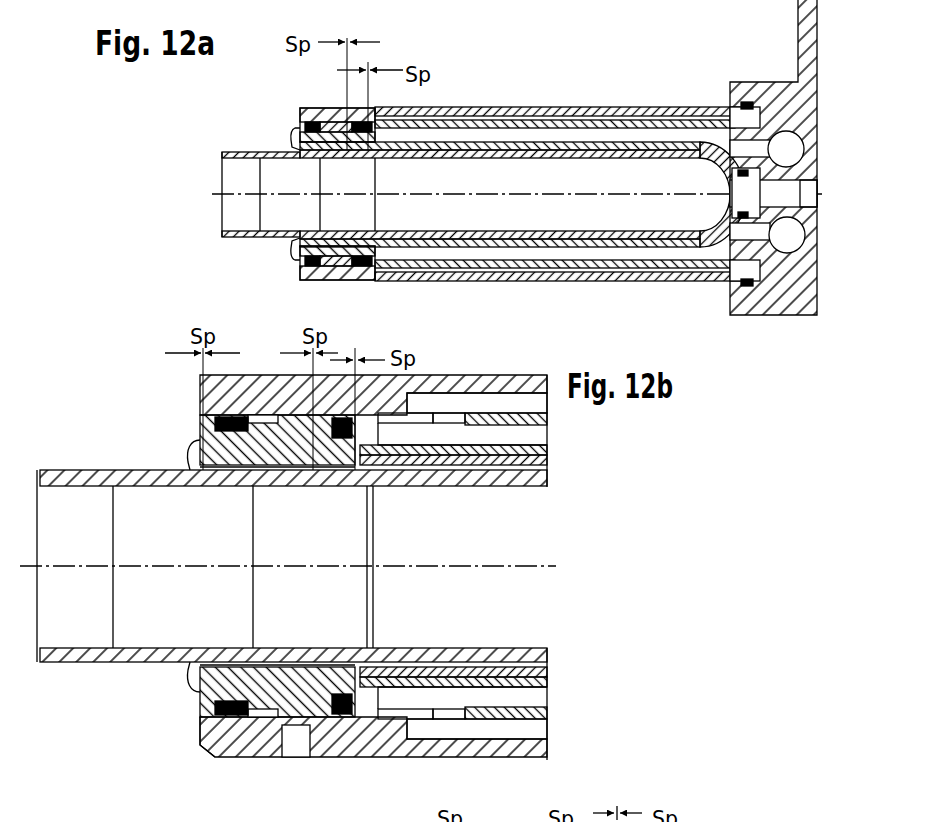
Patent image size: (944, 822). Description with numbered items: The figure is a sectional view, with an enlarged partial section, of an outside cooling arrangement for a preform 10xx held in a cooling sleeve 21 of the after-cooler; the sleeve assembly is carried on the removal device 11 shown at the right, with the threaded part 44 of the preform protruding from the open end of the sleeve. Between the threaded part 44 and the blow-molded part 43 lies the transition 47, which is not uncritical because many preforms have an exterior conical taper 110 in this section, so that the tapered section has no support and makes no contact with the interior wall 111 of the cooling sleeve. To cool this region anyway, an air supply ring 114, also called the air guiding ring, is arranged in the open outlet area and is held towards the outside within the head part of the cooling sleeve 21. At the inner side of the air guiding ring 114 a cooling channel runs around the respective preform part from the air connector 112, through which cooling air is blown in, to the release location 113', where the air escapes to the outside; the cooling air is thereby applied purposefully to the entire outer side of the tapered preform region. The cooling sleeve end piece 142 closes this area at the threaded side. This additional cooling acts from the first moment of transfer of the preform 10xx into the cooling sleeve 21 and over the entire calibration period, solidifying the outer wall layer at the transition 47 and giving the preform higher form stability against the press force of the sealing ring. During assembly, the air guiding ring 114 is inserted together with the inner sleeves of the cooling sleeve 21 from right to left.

In FIG. 12A, the threaded part 44 is at (252, 238).
In FIG. 12B, the threaded part 44 is at (90, 470).
In FIG. 12A, the preform 10xx is at (498, 247).
In FIG. 12B, the preform 10xx is at (195, 540).
In FIG. 12A, the air connector 112 is at (350, 278).
In FIG. 12B, the air connector 112 is at (292, 745).
In FIG. 12A, the ring 142 is at (298, 150).
In FIG. 12B, the ring 142 is at (295, 668).
In FIG. 12A, the cooling sleeve 21 is at (553, 103).
In FIG. 12A, the removal device 11 is at (778, 305).
In FIG. 12B, the transition 47 is at (258, 355).
In FIG. 12B, the blow-molded part 43 is at (477, 545).
In FIG. 12B, the interior wall 111 is at (262, 675).
In FIG. 12B, the conical taper 110 is at (243, 470).
In FIG. 12B, the release location 113' is at (152, 552).
In FIG. 12B, the air supply ring 114 is at (196, 700).